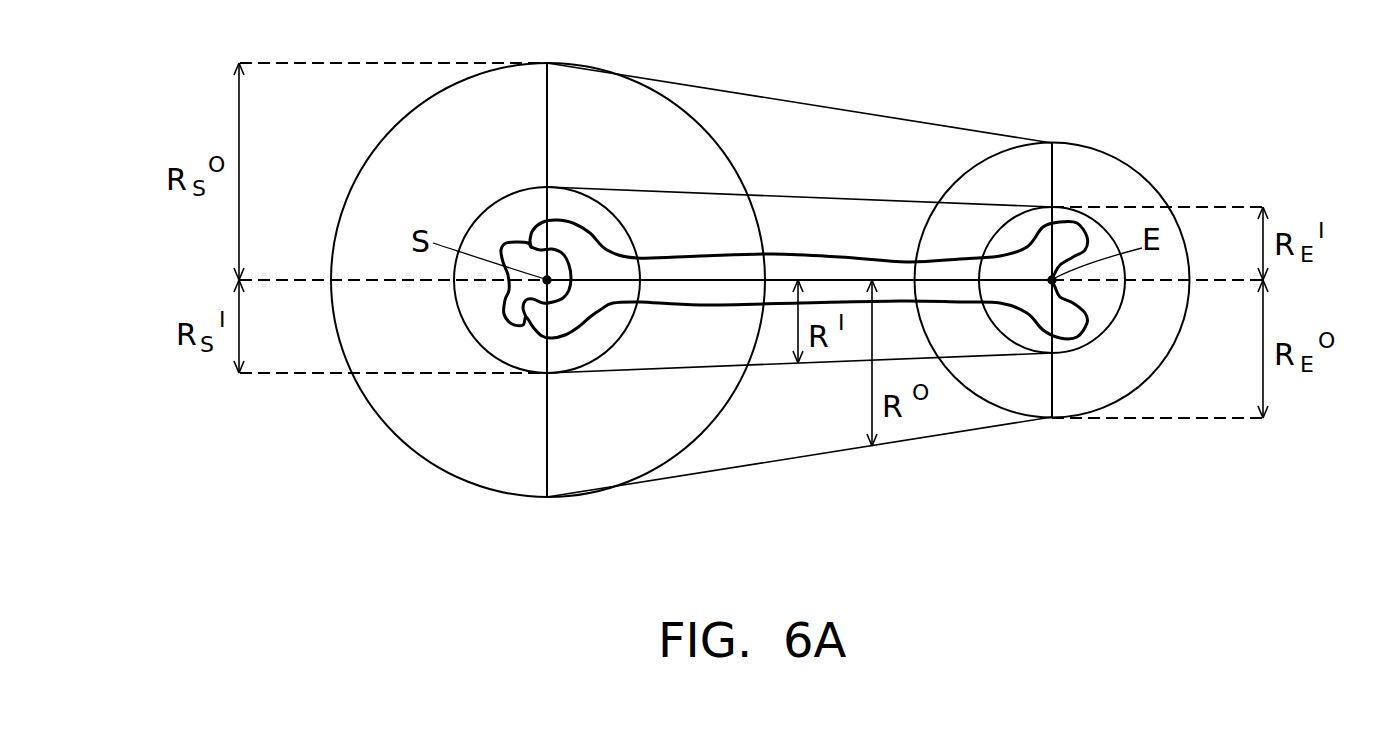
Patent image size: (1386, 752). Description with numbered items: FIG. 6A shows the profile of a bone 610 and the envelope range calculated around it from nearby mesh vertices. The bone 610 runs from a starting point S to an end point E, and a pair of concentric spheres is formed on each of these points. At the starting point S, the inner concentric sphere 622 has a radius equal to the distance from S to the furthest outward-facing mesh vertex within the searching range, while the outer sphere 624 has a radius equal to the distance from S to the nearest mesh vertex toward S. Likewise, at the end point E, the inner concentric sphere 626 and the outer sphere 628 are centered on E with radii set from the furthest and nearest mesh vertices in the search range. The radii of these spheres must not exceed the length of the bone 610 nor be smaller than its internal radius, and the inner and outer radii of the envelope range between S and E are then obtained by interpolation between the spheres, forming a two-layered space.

The bone 610 is at (833, 257).
The inner concentric sphere 622 is at (492, 205).
The outer sphere 624 is at (368, 156).
The inner concentric sphere 626 is at (1110, 327).
The outer sphere 628 is at (1123, 158).